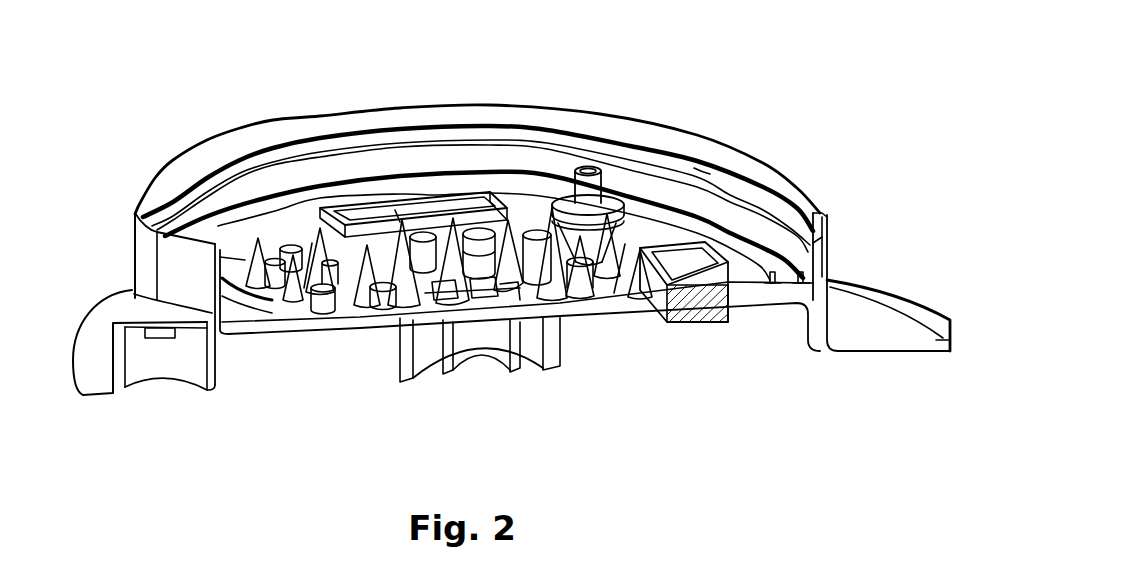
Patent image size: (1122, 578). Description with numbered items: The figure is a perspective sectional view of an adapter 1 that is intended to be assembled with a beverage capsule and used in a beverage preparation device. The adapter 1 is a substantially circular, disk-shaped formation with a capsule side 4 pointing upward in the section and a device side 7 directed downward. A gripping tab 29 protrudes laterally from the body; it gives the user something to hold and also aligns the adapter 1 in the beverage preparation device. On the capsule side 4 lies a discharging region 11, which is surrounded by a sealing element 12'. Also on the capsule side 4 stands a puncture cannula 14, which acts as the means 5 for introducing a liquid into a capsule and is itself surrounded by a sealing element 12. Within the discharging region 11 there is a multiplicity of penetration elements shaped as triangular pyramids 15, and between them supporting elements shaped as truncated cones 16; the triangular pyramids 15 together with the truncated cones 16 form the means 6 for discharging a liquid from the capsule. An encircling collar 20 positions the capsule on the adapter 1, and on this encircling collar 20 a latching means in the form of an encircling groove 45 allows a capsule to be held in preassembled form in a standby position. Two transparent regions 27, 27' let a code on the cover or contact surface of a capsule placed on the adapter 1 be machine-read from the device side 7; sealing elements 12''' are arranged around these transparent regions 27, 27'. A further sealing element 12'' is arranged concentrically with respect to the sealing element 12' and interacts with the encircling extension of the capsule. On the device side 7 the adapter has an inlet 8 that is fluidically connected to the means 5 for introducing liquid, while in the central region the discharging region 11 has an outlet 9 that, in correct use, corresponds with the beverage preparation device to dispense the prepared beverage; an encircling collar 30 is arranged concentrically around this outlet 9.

The adapter 1 is at (862, 107).
The capsule side 4 is at (267, 102).
The means for introducing a liquid 5 is at (599, 144).
The puncture cannula 14 is at (586, 165).
The means for discharging a liquid 6 is at (330, 363).
The triangular pyramids 15 is at (343, 303).
The device side 7 is at (609, 355).
The inlet 8 is at (160, 355).
The outlet 9 is at (477, 347).
The discharging region 11 is at (290, 232).
The sealing element 12 is at (574, 159).
The sealing element 12' is at (760, 377).
The sealing element 12'' is at (833, 378).
The sealing elements 12''' is at (557, 153).
The truncated cones 16 is at (360, 302).
The encircling collar 20 is at (171, 170).
The transparent region 27 is at (413, 127).
The transparent region 27' is at (684, 361).
The gripping tab 29 is at (870, 318).
The encircling collar 30 is at (545, 350).
The encircling groove 45 is at (694, 168).